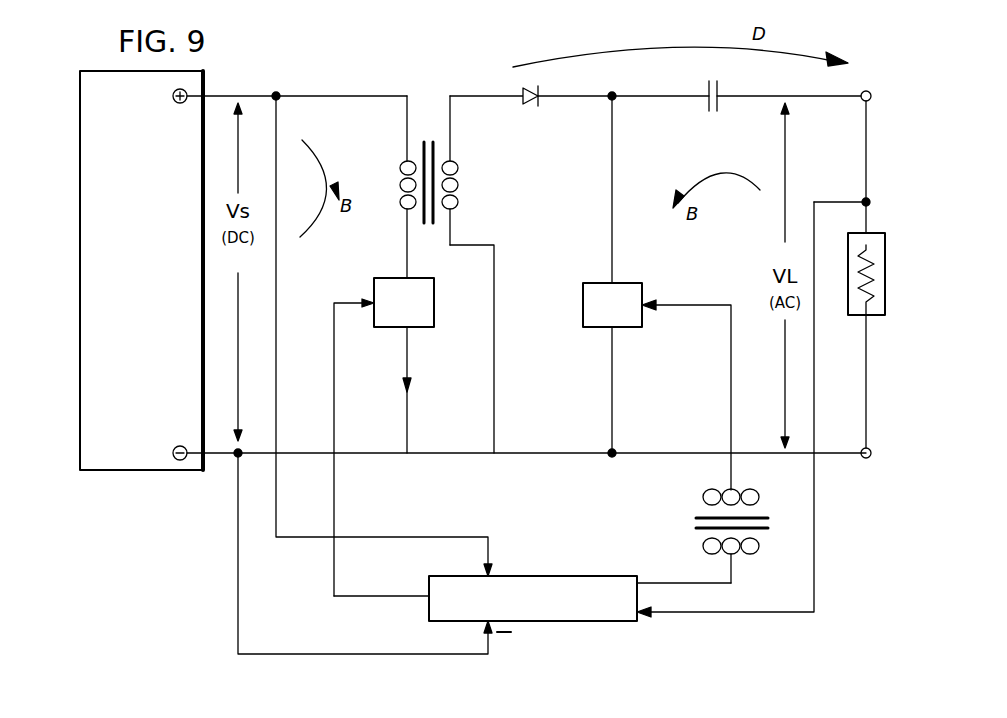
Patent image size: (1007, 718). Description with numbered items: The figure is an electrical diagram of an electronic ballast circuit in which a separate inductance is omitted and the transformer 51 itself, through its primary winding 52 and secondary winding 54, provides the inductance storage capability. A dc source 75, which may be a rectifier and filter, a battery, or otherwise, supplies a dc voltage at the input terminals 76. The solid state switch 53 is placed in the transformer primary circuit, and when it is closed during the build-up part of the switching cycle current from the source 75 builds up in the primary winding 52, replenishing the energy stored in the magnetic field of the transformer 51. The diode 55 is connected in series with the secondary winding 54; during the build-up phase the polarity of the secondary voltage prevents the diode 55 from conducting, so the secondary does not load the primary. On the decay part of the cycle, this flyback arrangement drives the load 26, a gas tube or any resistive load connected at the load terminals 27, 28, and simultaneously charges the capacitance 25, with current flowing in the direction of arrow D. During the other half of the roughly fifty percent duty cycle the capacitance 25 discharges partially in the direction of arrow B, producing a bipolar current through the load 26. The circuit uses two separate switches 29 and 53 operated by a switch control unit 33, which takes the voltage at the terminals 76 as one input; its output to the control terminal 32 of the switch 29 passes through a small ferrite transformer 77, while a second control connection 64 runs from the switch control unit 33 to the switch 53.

The dc source 75 is at (80, 150).
The input terminals 76 is at (278, 94).
The transformer 51 is at (432, 169).
The primary winding 52 is at (400, 168).
The secondary winding 54 is at (460, 186).
The switch 53 is at (384, 278).
The control line to switch 53 64 is at (334, 303).
The diode 55 is at (532, 102).
The capacitance 25 is at (706, 88).
The load terminal 27 is at (862, 102).
The load 26 is at (876, 316).
The load terminal 28 is at (862, 458).
The switch 29 is at (583, 328).
The control terminal 32 is at (731, 374).
The switch control unit 33 is at (578, 576).
The current sensing transformer 77 is at (776, 524).